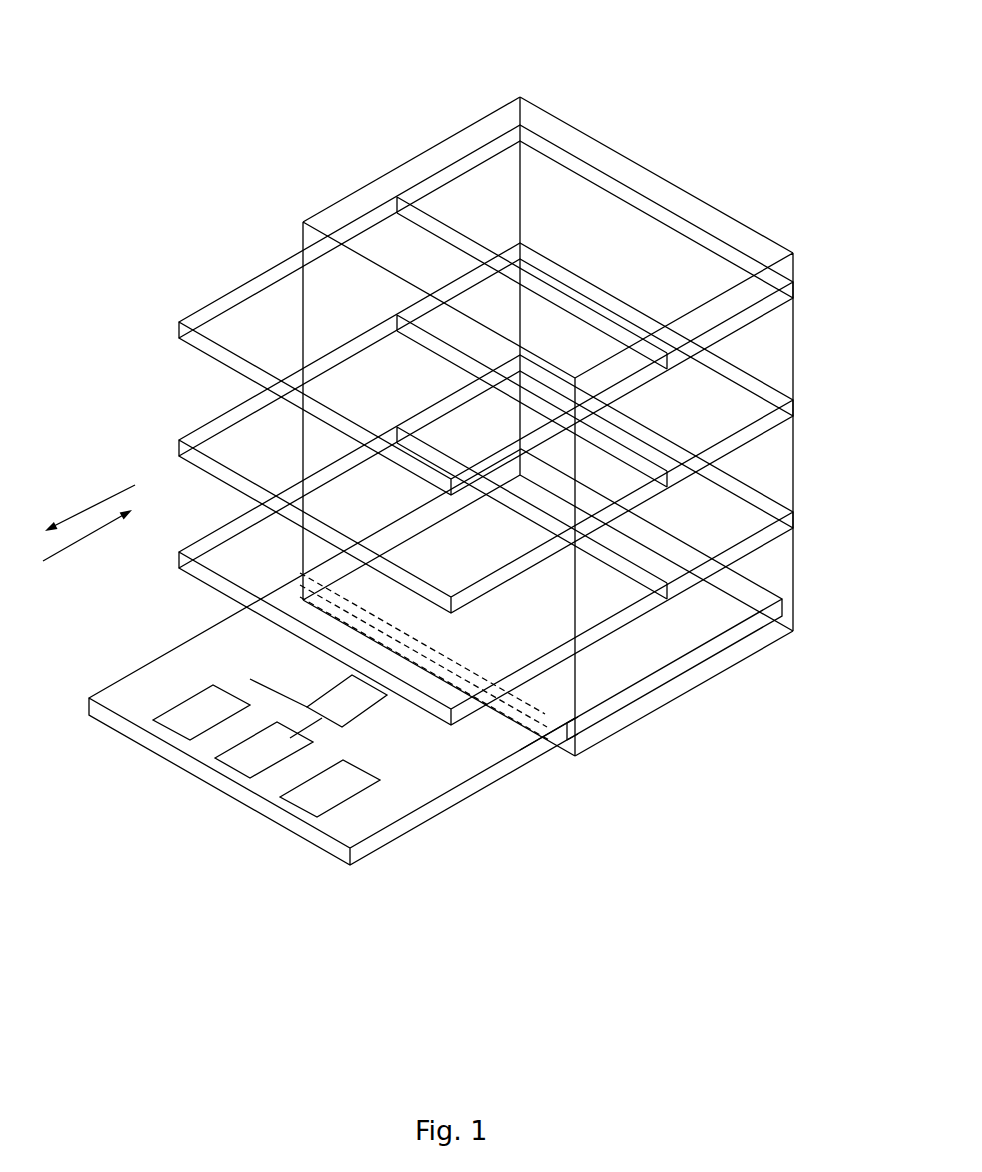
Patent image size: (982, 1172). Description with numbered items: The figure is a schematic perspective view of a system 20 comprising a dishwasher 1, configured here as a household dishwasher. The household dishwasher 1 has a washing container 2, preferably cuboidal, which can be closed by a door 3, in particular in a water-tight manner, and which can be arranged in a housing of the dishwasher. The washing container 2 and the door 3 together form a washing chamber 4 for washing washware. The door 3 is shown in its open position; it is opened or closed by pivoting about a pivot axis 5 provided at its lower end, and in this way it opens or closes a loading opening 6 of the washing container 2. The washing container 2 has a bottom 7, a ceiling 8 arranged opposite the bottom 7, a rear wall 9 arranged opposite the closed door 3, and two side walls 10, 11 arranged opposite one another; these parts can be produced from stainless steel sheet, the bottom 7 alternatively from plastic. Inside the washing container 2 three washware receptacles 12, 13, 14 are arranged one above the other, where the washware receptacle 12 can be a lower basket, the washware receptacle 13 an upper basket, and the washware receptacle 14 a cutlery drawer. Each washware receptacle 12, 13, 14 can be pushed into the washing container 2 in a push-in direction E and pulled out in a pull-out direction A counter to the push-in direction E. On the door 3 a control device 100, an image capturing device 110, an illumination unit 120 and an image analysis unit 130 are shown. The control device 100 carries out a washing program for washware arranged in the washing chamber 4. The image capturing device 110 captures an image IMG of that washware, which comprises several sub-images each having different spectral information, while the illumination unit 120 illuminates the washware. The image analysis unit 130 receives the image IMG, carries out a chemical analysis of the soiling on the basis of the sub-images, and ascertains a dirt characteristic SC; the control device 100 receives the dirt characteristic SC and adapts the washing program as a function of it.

The dishwasher 1 is at (340, 88).
The washing container 2 is at (330, 191).
The door 3 is at (173, 673).
The washing chamber 4 is at (562, 484).
The pivot axis 5 is at (583, 738).
The loading opening 6 is at (547, 700).
The bottom 7 is at (713, 677).
The ceiling 8 is at (575, 141).
The rear wall 9 is at (691, 212).
The side wall 10 is at (433, 181).
The side wall 11 is at (764, 374).
The washware receptacle 12 is at (210, 560).
The washware receptacle 13 is at (210, 444).
The washware receptacle 14 is at (249, 303).
The system 20 is at (160, 76).
The control device 100 is at (175, 738).
The image capturing device 110 is at (234, 784).
The illumination unit 120 is at (298, 814).
The image analysis unit 130 is at (350, 718).
The dirt characteristic SC is at (235, 686).
The image IMG is at (336, 714).
The pull-out direction A is at (90, 506).
The push-in direction E is at (87, 545).